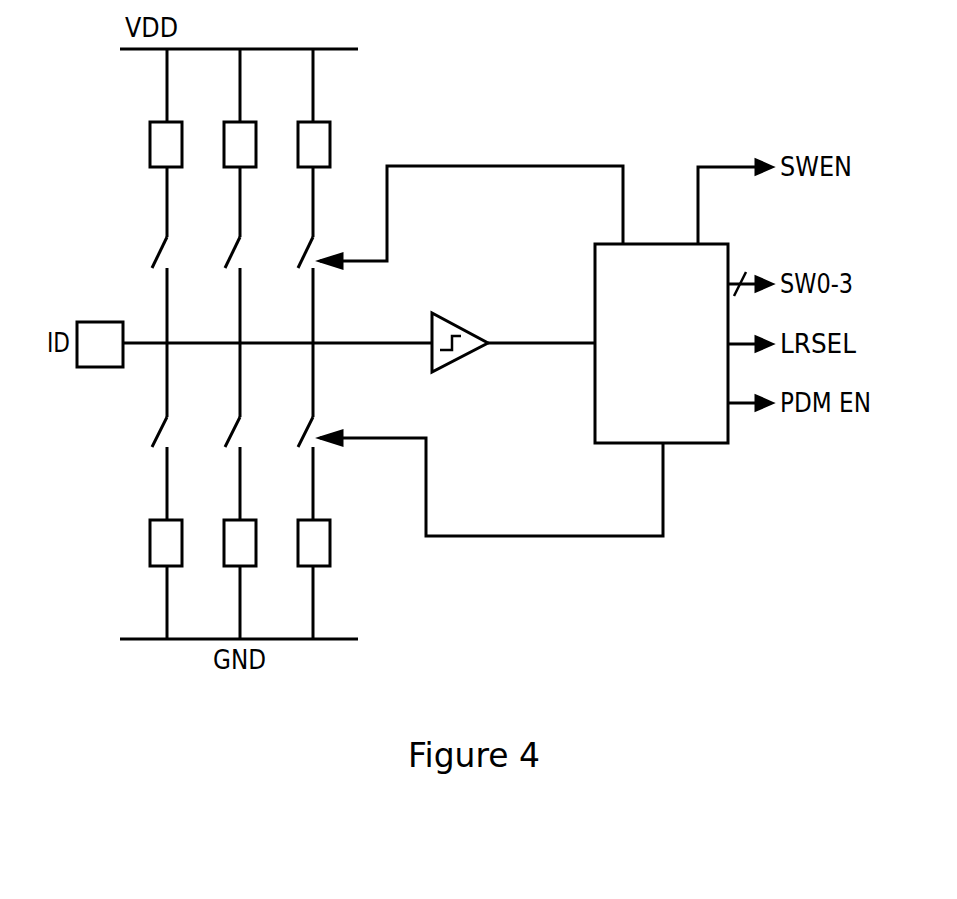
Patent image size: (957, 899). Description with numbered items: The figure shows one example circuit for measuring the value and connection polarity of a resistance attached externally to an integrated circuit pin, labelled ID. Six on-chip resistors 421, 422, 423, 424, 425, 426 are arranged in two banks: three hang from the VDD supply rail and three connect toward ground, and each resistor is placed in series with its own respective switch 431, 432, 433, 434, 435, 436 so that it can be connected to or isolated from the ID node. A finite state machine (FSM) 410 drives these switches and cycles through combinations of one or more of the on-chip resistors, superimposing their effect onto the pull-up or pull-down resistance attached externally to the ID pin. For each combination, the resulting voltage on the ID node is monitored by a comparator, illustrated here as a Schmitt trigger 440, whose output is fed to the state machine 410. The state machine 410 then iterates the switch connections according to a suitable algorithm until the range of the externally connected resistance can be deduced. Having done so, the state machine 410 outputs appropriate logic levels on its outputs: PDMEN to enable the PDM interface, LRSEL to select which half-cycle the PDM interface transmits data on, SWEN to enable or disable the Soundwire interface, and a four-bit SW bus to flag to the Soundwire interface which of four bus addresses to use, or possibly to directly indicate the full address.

The finite state machine 410 is at (680, 338).
The on-chip resistor 421 is at (150, 153).
The on-chip resistor 422 is at (224, 153).
The on-chip resistor 423 is at (298, 153).
The on-chip resistor 424 is at (148, 506).
The on-chip resistor 425 is at (222, 506).
The on-chip resistor 426 is at (296, 506).
The switch 431 is at (139, 287).
The switch 432 is at (212, 287).
The switch 433 is at (285, 287).
The switch 434 is at (139, 395).
The switch 435 is at (212, 395).
The switch 436 is at (285, 395).
The Schmitt trigger 440 is at (441, 313).